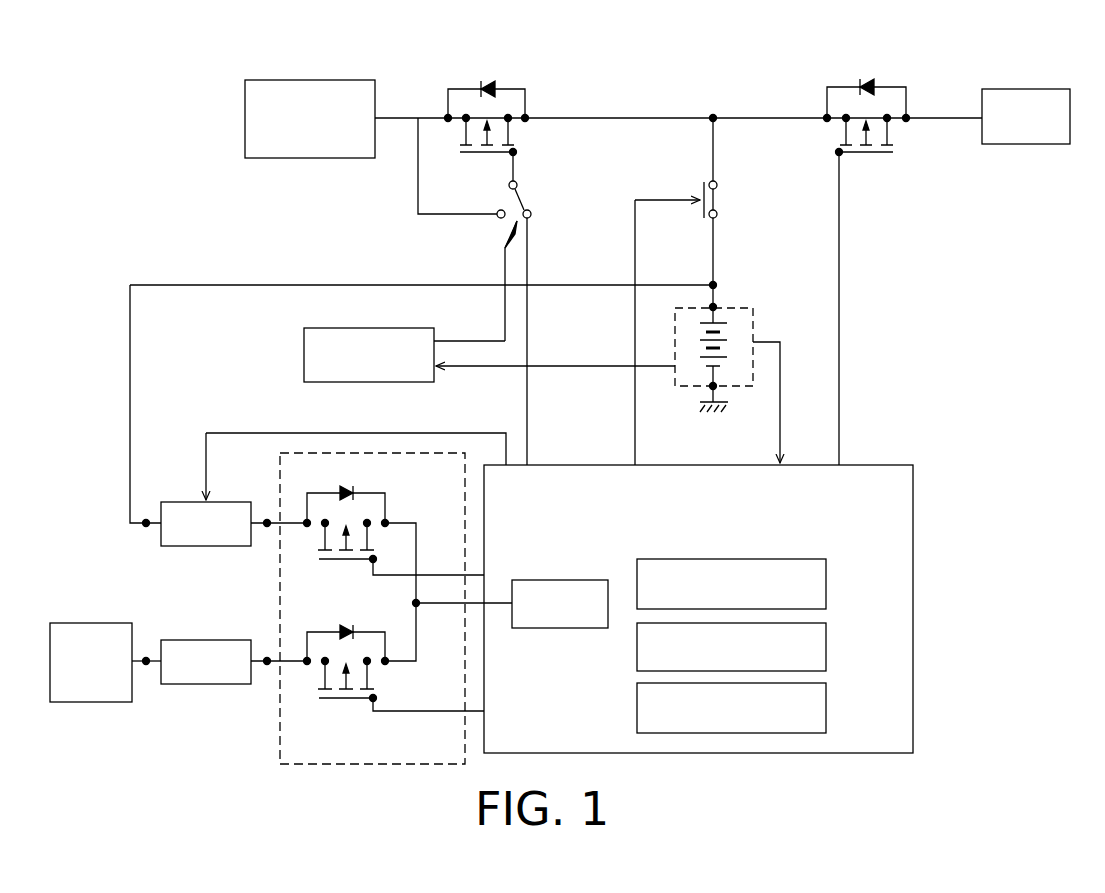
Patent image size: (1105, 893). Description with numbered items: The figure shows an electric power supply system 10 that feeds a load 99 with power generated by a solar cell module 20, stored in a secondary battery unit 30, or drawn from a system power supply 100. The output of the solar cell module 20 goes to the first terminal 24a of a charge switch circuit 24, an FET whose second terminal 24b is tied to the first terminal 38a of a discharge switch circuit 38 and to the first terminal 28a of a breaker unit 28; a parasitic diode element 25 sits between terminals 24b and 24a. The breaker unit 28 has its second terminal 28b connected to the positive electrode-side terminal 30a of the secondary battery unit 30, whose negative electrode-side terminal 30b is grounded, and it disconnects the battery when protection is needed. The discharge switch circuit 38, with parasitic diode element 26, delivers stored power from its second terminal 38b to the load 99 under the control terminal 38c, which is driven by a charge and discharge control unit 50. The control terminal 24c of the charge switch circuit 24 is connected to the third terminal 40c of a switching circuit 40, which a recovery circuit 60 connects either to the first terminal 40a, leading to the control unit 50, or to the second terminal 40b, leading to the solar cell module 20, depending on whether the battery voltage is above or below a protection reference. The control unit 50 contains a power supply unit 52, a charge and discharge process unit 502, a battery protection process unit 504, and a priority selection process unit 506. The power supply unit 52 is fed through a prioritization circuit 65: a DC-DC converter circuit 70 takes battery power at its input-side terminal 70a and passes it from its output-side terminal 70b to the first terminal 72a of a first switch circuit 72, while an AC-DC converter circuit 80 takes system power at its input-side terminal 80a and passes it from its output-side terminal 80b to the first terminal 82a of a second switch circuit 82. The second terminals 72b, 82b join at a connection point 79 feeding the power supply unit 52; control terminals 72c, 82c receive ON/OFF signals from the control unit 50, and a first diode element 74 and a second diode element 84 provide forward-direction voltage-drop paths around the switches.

The electric power supply system 10 is at (160, 108).
The solar cell module 20 is at (318, 80).
The charge switch circuit 24 is at (513, 152).
The first terminal 24a is at (464, 122).
The second terminal 24b is at (508, 116).
The control terminal 24c is at (512, 156).
The diode element 25 is at (490, 82).
The diode element 26 is at (871, 80).
The breaker unit 28 is at (722, 203).
The first terminal 28a is at (717, 183).
The second terminal 28b is at (717, 218).
The secondary battery unit 30 is at (755, 312).
The positive electrode-side terminal 30a is at (715, 304).
The negative electrode-side terminal 30b is at (710, 390).
The discharge switch circuit 38 is at (895, 152).
The first terminal 38a is at (844, 122).
The second terminal 38b is at (888, 116).
The control terminal 38c is at (842, 156).
The switching circuit 40 is at (540, 226).
The first terminal 40a is at (532, 214).
The second terminal 40b is at (500, 219).
The third terminal 40c is at (518, 185).
The charge and discharge control unit 50 is at (913, 677).
The power supply unit 52 is at (560, 630).
The recovery circuit 60 is at (304, 357).
The prioritization circuit 65 is at (360, 766).
The DC-DC converter circuit 70 is at (205, 547).
The input-side terminal 70a is at (146, 527).
The output-side terminal 70b is at (267, 527).
The first switch circuit 72 is at (352, 566).
The first terminal 72a is at (324, 527).
The second terminal 72b is at (368, 520).
The control terminal 72c is at (377, 559).
The first diode element 74 is at (355, 490).
The connection point 79 is at (419, 607).
The AC-DC converter circuit 80 is at (205, 685).
The input-side terminal 80a is at (146, 665).
The output-side terminal 80b is at (267, 665).
The second switch circuit 82 is at (352, 705).
The first terminal 82a is at (324, 665).
The second terminal 82b is at (369, 665).
The control terminal 82c is at (373, 702).
The second diode element 84 is at (354, 630).
The load 99 is at (1027, 89).
The system power supply 100 is at (90, 702).
The charge and discharge process unit 502 is at (826, 583).
The battery protection process unit 504 is at (826, 645).
The priority selection process unit 506 is at (826, 709).